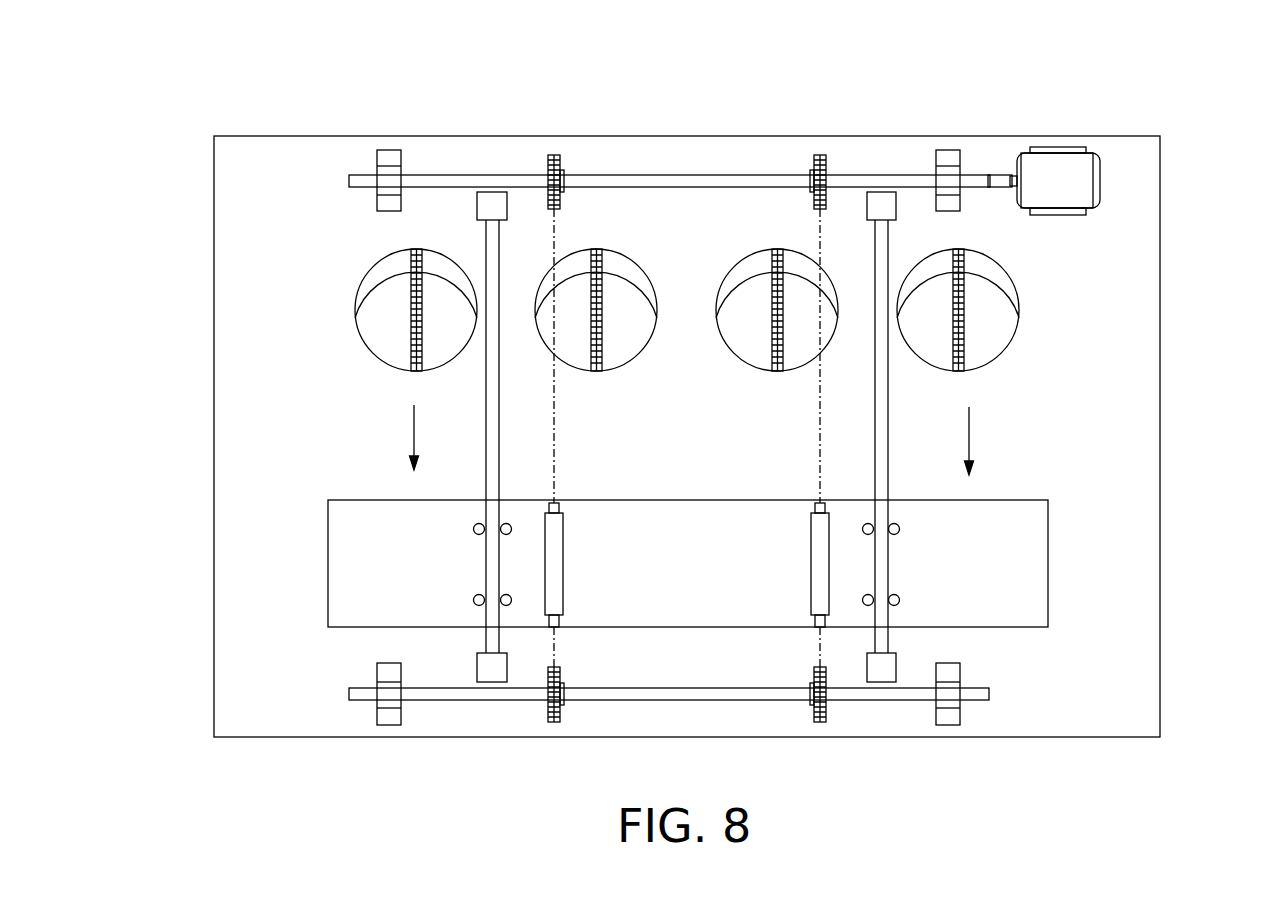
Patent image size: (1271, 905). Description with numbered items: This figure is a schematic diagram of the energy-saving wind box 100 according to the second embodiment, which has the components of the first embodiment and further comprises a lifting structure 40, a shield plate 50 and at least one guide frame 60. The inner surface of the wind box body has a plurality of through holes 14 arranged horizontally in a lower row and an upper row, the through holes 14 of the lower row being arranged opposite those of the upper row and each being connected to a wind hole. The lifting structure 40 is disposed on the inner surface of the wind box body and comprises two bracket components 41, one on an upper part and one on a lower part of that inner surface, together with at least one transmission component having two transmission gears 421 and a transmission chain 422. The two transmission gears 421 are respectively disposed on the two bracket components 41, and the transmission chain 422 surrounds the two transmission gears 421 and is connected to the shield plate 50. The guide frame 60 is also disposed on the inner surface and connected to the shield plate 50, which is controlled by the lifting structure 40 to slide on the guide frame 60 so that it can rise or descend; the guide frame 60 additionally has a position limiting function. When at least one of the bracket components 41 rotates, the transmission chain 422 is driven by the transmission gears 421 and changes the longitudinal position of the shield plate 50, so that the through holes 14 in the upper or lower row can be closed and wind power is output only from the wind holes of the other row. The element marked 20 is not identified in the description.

The energy-saving wind box 100 is at (1168, 195).
The lifting structure 40 is at (1068, 148).
The bracket component 41 is at (697, 183).
The transmission gear 421 is at (557, 155).
The transmission chain 422 is at (556, 427).
The workpiece 20 is at (408, 330).
The through hole 14 is at (366, 347).
The guide frame 60 is at (895, 400).
The shield plate 50 is at (1036, 502).